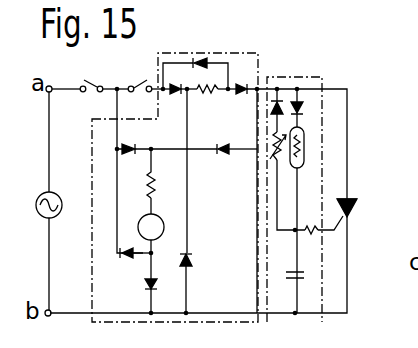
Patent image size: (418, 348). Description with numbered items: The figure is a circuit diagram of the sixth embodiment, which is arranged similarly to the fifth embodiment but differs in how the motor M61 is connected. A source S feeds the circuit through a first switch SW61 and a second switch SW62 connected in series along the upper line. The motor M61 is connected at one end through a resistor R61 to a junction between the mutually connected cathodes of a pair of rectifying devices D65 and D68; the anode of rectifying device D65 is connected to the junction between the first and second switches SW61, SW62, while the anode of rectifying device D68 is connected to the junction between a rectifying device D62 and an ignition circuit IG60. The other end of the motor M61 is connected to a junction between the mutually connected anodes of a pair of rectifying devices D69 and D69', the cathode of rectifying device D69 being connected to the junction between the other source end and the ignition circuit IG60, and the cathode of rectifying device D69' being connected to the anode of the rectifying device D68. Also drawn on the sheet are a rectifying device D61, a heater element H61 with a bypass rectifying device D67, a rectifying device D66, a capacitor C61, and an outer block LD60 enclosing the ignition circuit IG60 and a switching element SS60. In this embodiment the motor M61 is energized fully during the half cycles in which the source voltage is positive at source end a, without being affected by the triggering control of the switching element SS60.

The lighting device circuit LD60 is at (231, 53).
The ignition circuit IG60 is at (311, 77).
The AC power source S is at (39, 201).
The first switch SW61 is at (82, 100).
The second switch SW62 is at (124, 71).
The diode D61 is at (173, 97).
The heater resistor H61 is at (211, 101).
The diode D67 is at (195, 59).
The rectifying device D62 is at (249, 83).
The rectifying device D68 is at (113, 149).
The rectifying device D65 is at (237, 138).
The resistor R61 is at (160, 182).
The motor M61 is at (166, 221).
The rectifying device D69' is at (125, 267).
The rectifying device D69 is at (189, 296).
The diode D66 is at (206, 201).
The switching element SS60 is at (375, 214).
The capacitor C61 is at (305, 274).